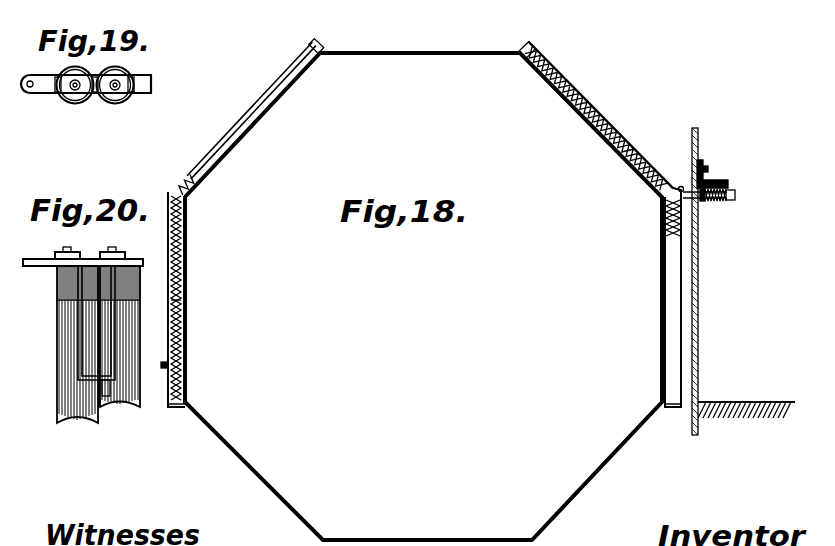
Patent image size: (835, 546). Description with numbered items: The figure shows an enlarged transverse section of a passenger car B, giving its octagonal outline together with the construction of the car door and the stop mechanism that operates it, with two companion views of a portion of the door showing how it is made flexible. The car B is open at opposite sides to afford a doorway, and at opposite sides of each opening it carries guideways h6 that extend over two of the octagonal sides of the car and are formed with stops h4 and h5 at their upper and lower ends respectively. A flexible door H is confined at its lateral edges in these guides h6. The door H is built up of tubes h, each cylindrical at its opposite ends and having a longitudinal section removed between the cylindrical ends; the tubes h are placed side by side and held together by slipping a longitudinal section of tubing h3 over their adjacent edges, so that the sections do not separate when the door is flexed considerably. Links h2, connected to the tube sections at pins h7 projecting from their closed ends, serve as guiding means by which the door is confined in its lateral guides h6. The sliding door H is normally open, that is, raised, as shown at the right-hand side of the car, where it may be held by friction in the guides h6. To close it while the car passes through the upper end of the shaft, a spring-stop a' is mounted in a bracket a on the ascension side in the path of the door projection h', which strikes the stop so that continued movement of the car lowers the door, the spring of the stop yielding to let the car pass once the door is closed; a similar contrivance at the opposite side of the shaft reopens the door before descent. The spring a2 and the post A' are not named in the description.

In FIG. 18, the car B is at (423, 296).
In FIG. 18, the flexible door H is at (186, 272).
In FIG. 20, the flexible door H is at (85, 344).
In FIG. 18, the tube h is at (197, 312).
In FIG. 19, the tube h is at (95, 107).
In FIG. 20, the tube h is at (96, 382).
In FIG. 18, the door projection h' is at (413, 282).
In FIG. 19, the link h2 is at (145, 96).
In FIG. 20, the link h2 is at (142, 247).
In FIG. 19, the longitudinal section of tubing h3 is at (78, 70).
In FIG. 20, the longitudinal section of tubing h3 is at (79, 357).
In FIG. 18, the upper stop h4 is at (322, 46).
In FIG. 18, the lower stop h5 is at (668, 408).
In FIG. 18, the guideway h6 is at (209, 151).
In FIG. 20, the pin h7 is at (110, 250).
In FIG. 18, the bracket a is at (728, 170).
In FIG. 18, the bolt spring a2 is at (723, 200).
In FIG. 18, the spring-stop a' is at (756, 212).
In FIG. 18, the post A' is at (743, 281).